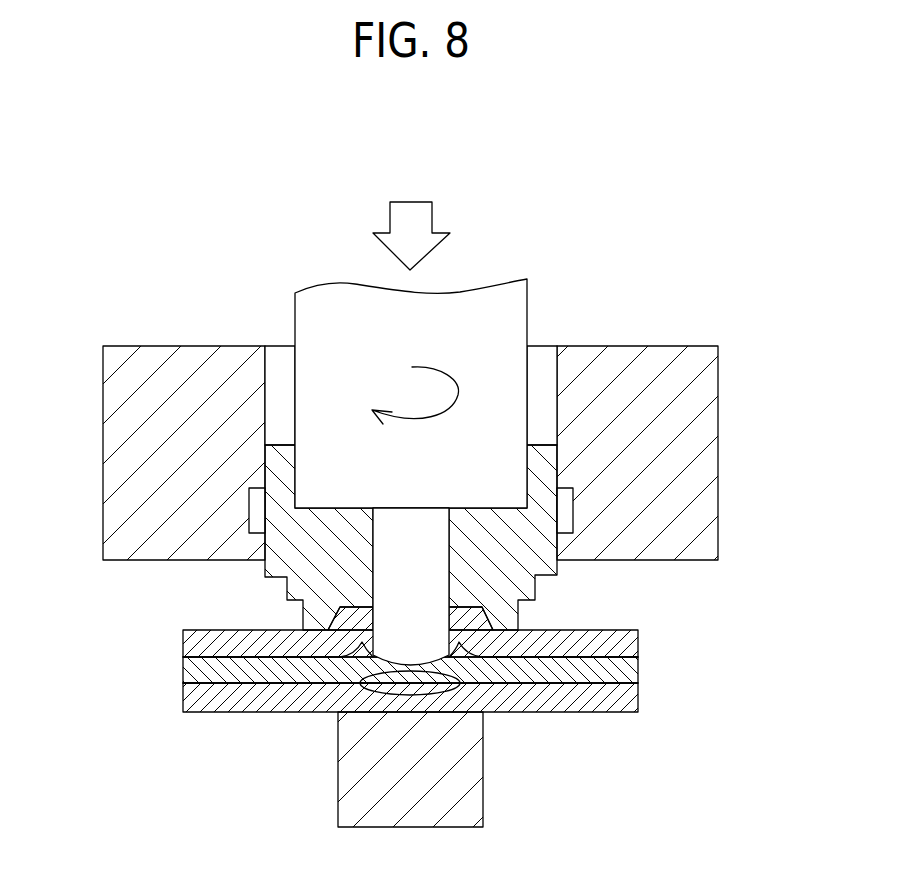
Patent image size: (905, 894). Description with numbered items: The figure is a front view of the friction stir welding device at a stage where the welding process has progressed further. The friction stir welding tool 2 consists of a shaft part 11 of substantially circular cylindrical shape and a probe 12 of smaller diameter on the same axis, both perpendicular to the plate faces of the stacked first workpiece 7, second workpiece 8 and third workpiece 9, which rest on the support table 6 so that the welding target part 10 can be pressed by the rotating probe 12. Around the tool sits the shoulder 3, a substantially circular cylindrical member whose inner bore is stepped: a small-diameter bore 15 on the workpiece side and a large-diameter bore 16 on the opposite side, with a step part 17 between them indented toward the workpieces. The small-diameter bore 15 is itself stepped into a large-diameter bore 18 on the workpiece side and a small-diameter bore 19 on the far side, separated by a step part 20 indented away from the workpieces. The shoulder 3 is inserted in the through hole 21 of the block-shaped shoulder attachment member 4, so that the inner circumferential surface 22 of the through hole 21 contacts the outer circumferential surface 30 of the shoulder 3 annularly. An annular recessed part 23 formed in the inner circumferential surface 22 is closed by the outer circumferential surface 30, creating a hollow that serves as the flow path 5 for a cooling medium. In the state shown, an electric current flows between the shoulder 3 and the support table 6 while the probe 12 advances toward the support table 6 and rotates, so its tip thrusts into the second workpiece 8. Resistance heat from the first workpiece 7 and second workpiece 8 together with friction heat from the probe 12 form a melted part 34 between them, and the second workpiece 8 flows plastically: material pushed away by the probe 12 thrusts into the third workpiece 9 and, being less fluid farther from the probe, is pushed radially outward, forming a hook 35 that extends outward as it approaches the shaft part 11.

The friction stir welding tool 2 is at (482, 446).
The shaft part 11 is at (510, 308).
The probe 12 is at (423, 533).
The shoulder 3 is at (280, 545).
The shoulder attachment member 4 is at (700, 450).
The flow path 5 is at (257, 512).
The support table 6 is at (428, 819).
The first workpiece 7 is at (632, 697).
The second workpiece 8 is at (632, 668).
The third workpiece 9 is at (632, 642).
The welding target part 10 is at (378, 670).
The small-diameter bore 15 is at (385, 555).
The large-diameter bore 16 is at (297, 487).
The step part 17 is at (347, 508).
The large-diameter bore 18 is at (375, 662).
The small-diameter bore 19 is at (450, 532).
The step part 20 is at (470, 610).
The through hole 21 is at (278, 362).
The inner circumferential surface 22 is at (266, 400).
The recessed part 23 is at (562, 508).
The outer circumferential surface 30 is at (558, 458).
The melted part 34 is at (427, 697).
The hook 35 is at (365, 652).